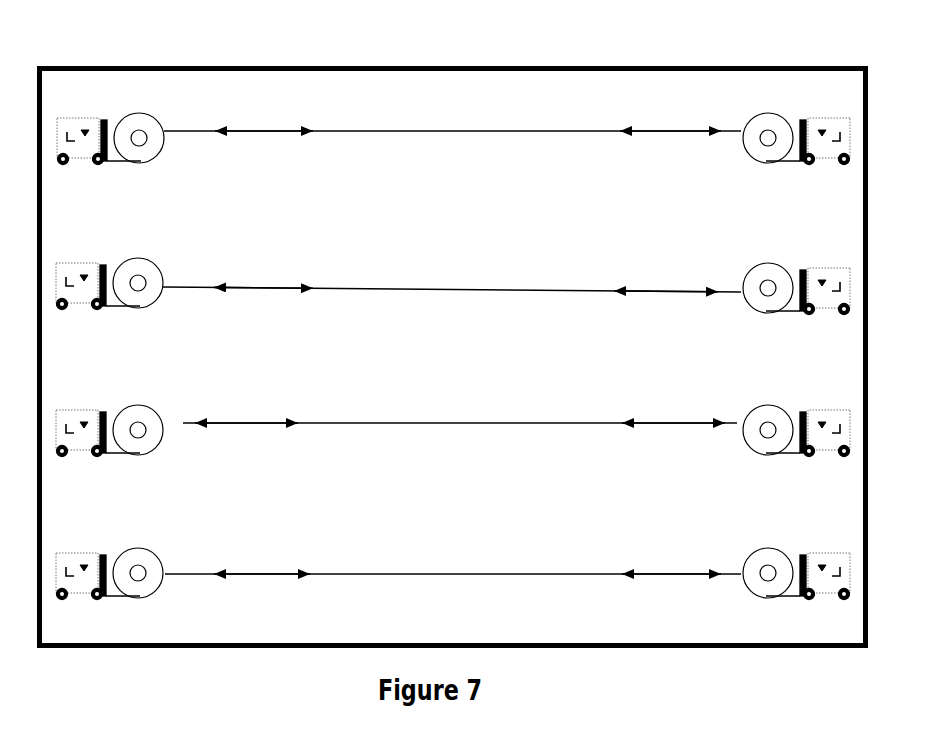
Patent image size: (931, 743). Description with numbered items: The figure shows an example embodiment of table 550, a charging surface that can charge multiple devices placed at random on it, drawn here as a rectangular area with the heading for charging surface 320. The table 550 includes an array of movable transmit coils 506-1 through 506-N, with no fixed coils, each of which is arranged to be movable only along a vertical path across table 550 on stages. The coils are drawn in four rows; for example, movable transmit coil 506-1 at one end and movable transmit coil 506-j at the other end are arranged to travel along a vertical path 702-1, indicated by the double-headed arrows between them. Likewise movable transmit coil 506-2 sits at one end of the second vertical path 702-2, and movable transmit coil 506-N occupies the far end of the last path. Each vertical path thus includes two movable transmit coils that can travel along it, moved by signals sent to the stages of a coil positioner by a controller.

The charging surface (table) 320 is at (453, 334).
The table 550 is at (453, 351).
The movable transmit coil 506-1 is at (157, 165).
The movable transmit coil 506-2 is at (153, 287).
The movable transmit coil 506-j is at (755, 143).
The movable transmit coil 506-N is at (767, 550).
The vertical path 702-1 is at (491, 131).
The vertical path 702-2 is at (480, 292).